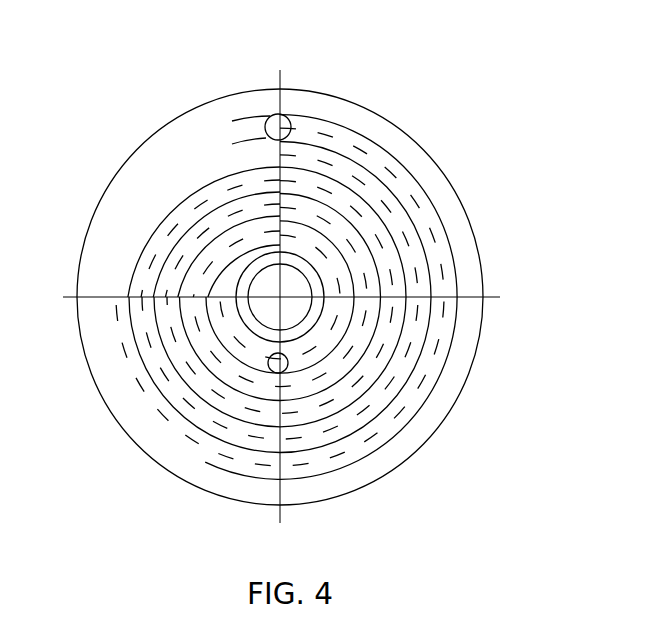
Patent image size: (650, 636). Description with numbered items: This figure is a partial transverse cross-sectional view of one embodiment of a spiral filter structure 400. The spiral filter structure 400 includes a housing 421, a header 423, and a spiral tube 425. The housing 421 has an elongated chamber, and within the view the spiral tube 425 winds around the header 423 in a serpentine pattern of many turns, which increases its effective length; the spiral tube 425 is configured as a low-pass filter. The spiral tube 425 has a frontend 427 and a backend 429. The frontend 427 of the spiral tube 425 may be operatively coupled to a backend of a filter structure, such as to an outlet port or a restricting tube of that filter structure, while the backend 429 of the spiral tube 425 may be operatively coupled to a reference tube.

The spiral filter structure 400 is at (288, 24).
The housing 421 is at (468, 228).
The header 423 is at (386, 235).
The spiral tube 425 is at (212, 386).
The frontend 427 is at (290, 100).
The backend 429 is at (245, 362).